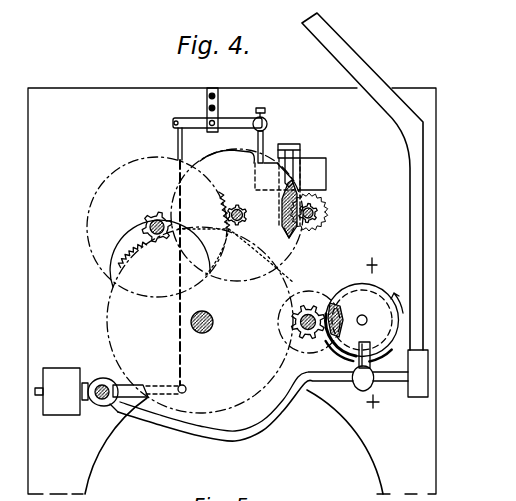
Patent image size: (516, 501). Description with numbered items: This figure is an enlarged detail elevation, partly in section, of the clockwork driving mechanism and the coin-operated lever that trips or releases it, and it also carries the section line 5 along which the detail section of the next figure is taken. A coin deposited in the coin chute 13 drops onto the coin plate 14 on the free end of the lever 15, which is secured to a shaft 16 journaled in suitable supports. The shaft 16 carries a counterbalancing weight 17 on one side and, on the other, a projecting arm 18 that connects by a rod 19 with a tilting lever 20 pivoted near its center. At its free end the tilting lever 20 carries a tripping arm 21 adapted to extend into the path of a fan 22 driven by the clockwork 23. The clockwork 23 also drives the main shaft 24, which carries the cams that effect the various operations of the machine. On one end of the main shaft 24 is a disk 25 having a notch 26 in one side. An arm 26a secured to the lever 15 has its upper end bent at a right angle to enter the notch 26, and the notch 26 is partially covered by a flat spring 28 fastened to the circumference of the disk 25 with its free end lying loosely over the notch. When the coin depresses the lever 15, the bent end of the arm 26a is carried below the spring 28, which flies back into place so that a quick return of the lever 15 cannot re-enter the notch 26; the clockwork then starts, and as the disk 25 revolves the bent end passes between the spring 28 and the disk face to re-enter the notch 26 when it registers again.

The coin chute 13 is at (374, 76).
The coin plate 14 is at (420, 385).
The lever 15 is at (293, 410).
The shaft 16 is at (100, 383).
The counterbalancing weight 17 is at (66, 372).
The projecting arm 18 is at (132, 383).
The rod 19 is at (181, 307).
The tilting lever 20 is at (238, 128).
The tripping arm 21 is at (265, 160).
The fan 22 is at (313, 163).
The clockwork 23 is at (309, 311).
The main shaft 24 is at (358, 315).
The disk 25 is at (392, 293).
The notch 26 is at (366, 342).
The arm 26a is at (377, 348).
The flat spring 28 is at (373, 364).
The section line 5- 5 is at (374, 340).